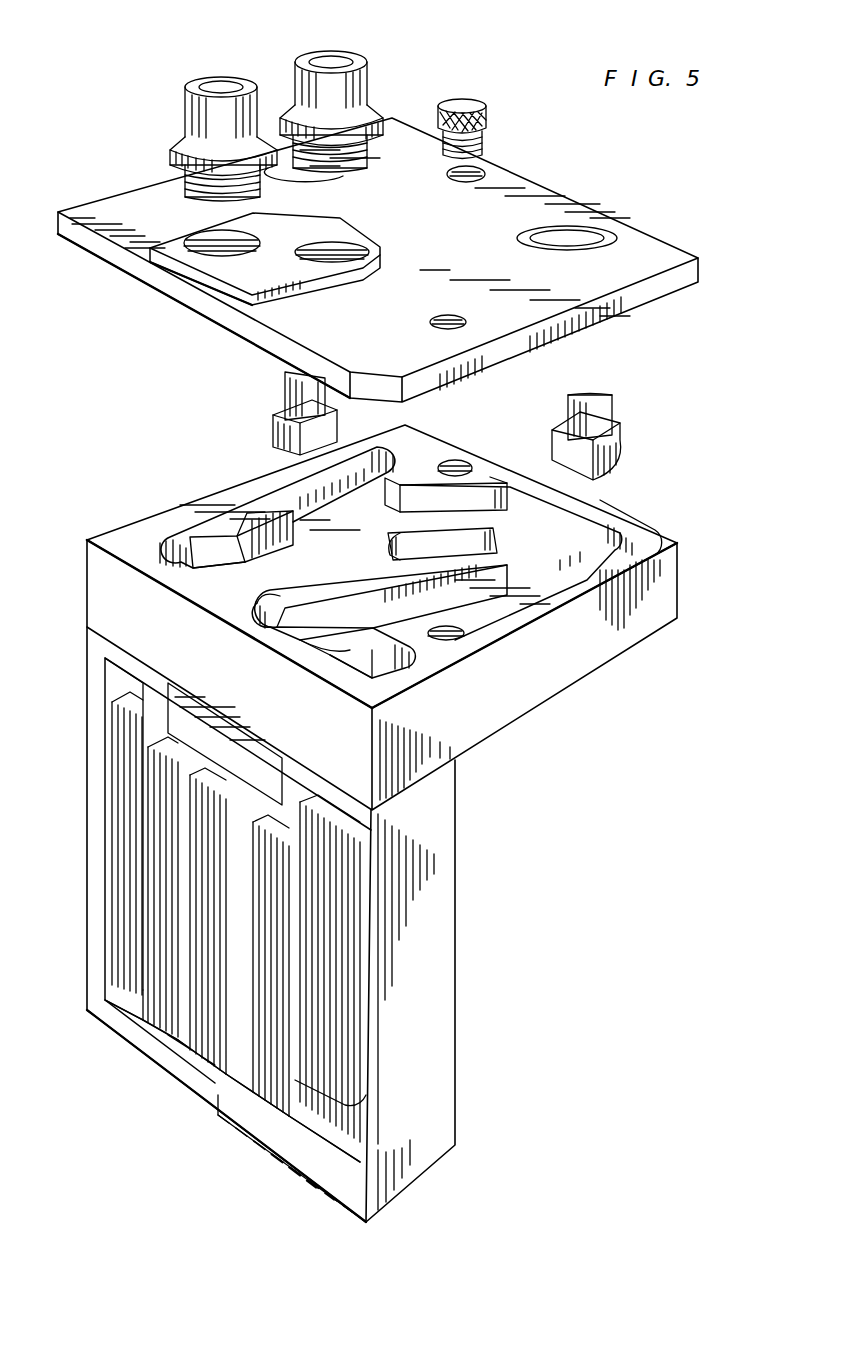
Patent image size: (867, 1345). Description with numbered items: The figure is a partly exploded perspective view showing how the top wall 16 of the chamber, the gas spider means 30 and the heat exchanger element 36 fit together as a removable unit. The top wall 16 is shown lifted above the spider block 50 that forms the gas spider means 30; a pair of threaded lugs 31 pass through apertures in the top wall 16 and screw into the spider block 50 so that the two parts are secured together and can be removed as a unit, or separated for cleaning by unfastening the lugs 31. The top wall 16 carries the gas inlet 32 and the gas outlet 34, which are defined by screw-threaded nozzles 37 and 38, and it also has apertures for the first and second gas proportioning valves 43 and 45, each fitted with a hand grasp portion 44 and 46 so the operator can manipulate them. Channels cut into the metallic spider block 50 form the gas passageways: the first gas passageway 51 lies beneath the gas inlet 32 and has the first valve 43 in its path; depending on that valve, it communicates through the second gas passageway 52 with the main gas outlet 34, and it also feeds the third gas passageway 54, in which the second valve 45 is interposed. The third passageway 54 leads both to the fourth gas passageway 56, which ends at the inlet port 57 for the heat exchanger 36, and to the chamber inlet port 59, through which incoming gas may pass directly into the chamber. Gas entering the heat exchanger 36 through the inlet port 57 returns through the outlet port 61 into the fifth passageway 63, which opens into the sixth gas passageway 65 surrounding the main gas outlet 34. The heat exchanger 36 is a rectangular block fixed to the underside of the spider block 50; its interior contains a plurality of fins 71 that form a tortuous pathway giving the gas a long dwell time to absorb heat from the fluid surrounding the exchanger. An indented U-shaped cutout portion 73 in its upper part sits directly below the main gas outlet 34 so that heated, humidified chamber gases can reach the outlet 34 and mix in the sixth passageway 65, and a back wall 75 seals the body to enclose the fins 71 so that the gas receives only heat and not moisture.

The top wall 16 is at (653, 240).
The gas spider means 30 is at (389, 814).
The threaded lugs 31 is at (470, 108).
The gas inlet 32 is at (343, 252).
The gas outlet 34 is at (200, 235).
The heat exchanger element 36 is at (430, 878).
The nozzle 37 is at (303, 88).
The nozzle 38 is at (198, 85).
The first gas proportioning valve 43 is at (622, 445).
The hand grasp portion 44 is at (597, 417).
The second gas proportioning valve 45 is at (272, 433).
The hand grasp portion 46 is at (298, 388).
The spider block 50 is at (408, 608).
The first gas passageway 51 is at (463, 553).
The second gas passageway 52 is at (457, 610).
The third gas passageway 54 is at (517, 513).
The fourth gas passageway 56 is at (270, 558).
The inlet port 57 is at (192, 565).
The chamber inlet port 59 is at (398, 450).
The outlet port 61 is at (345, 665).
The fifth passageway 63 is at (415, 650).
The sixth gas passageway 65 is at (340, 648).
The fins 71 is at (130, 867).
The U-shaped cutout portion 73 is at (165, 708).
The back wall 75 is at (383, 1155).